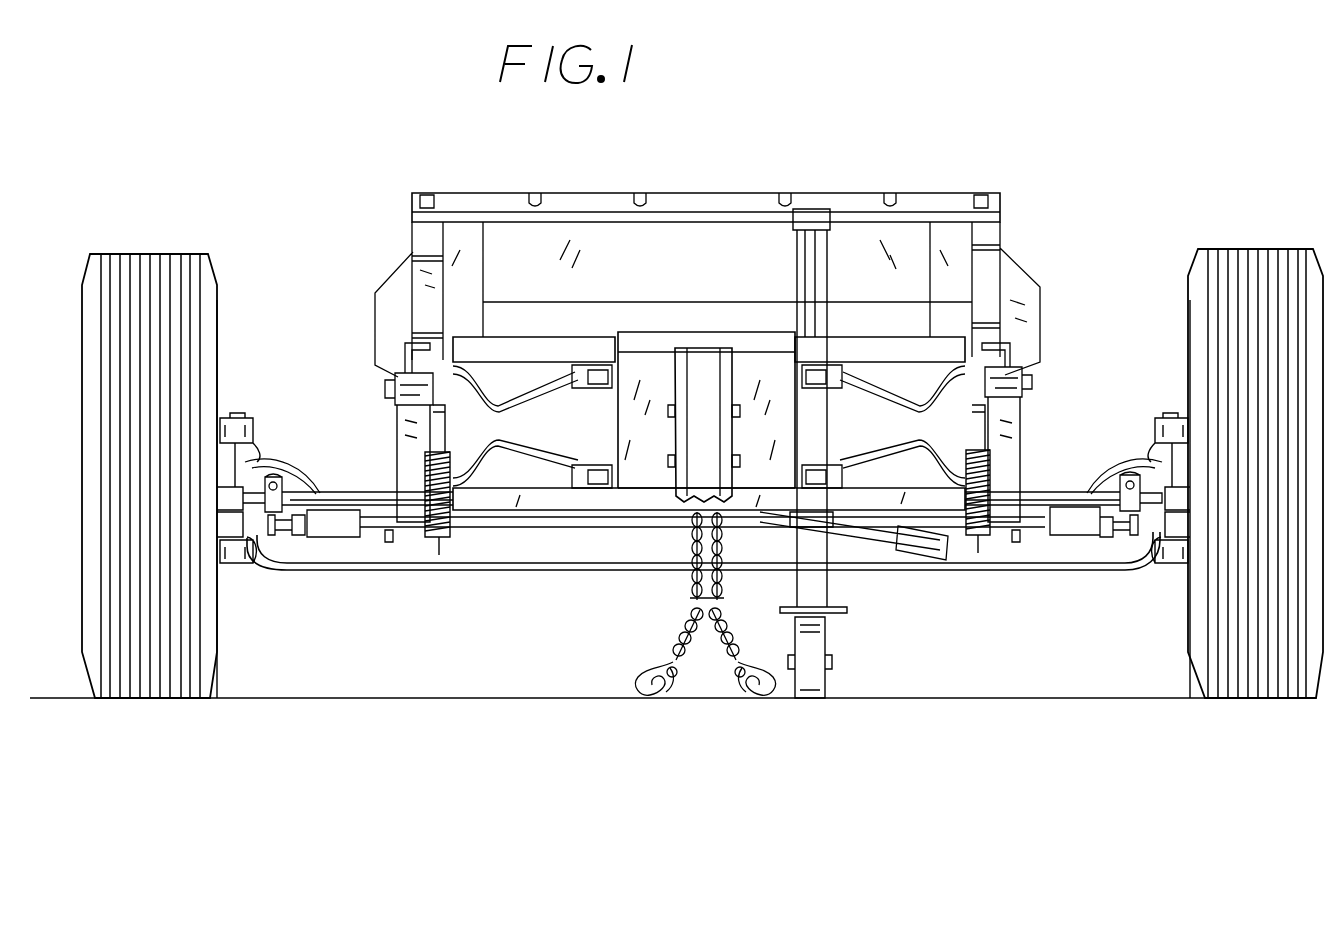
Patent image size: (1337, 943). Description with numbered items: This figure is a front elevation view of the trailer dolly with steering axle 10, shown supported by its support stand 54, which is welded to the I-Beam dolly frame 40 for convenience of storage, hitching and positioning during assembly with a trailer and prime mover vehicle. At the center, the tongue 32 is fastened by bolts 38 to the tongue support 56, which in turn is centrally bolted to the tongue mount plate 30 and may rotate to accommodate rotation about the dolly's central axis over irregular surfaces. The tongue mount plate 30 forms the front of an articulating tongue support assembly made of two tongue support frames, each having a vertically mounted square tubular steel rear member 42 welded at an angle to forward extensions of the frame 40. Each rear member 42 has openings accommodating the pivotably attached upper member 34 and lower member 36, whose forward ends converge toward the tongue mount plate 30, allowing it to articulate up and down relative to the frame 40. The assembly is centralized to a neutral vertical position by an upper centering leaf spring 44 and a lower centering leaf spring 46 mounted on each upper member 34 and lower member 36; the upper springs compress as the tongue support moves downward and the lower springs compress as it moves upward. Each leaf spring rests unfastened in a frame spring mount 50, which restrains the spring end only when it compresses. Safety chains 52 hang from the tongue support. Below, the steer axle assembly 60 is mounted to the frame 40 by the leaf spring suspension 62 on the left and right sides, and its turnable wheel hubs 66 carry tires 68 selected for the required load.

The trailer dolly with steering axle 10 is at (1035, 213).
The tongue mount plate 30 is at (668, 345).
The tongue 32 is at (698, 400).
The upper member 34 is at (498, 348).
The lower member 36 is at (475, 500).
The bolts 38 is at (746, 400).
The I-Beam dolly frame 40 is at (1003, 215).
The rear member 42 is at (462, 428).
The upper centering leaf spring 44 is at (497, 393).
The lower centering leaf spring 46 is at (485, 478).
The frame spring mount 50 is at (575, 465).
The safety chains 52 is at (710, 656).
The support stand 54 is at (823, 588).
The tongue support 56 is at (628, 490).
The steer axle assembly 60 is at (1040, 570).
The leaf spring suspension 62 is at (402, 455).
The wheel hubs 66 is at (218, 562).
The tires 68 is at (180, 253).